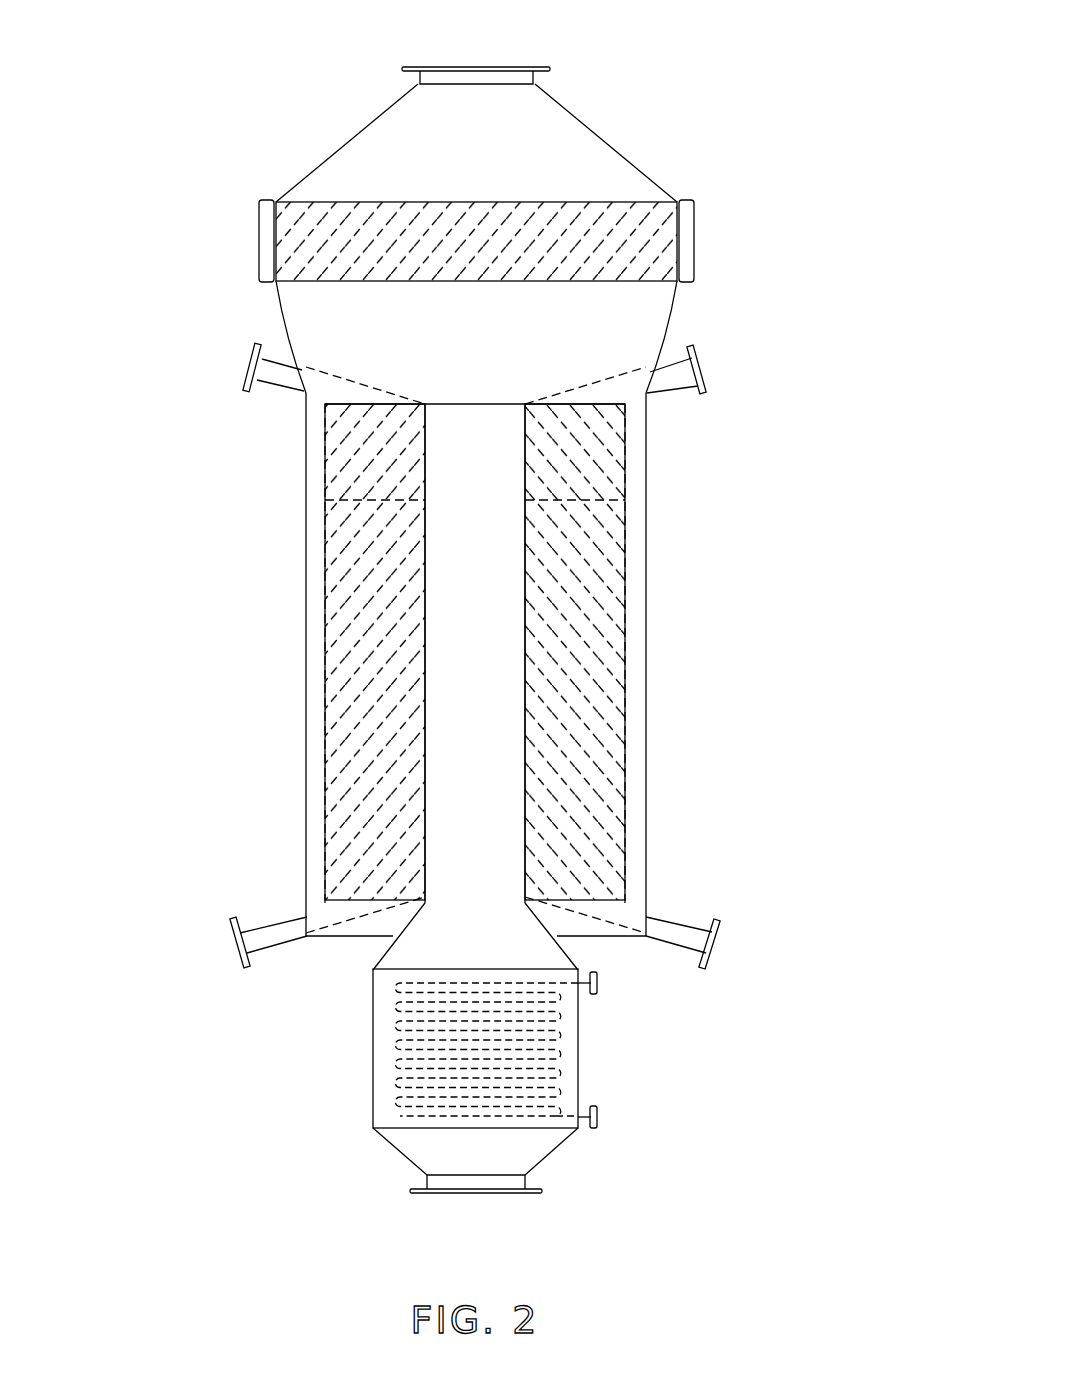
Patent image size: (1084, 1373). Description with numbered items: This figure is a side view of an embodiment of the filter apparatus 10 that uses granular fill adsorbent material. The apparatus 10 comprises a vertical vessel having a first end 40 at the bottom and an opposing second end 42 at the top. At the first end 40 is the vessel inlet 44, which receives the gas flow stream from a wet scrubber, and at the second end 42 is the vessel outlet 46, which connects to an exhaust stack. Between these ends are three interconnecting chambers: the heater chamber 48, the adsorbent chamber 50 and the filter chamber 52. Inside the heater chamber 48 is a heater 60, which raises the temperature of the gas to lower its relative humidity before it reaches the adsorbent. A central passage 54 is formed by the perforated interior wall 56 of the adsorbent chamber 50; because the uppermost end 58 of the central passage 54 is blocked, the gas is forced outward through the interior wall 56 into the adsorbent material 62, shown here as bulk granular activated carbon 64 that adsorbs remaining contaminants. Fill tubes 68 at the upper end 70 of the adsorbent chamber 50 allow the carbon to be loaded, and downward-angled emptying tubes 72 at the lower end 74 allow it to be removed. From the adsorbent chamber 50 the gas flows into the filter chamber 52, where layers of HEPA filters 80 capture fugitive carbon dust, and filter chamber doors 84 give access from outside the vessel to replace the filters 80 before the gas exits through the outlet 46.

The apparatus 10 is at (270, 148).
The first end 40 is at (395, 1157).
The second end 42 is at (600, 129).
The vessel inlet 44 is at (522, 1203).
The vessel outlet 46 is at (432, 62).
The heater chamber 48 is at (567, 1038).
The adsorbent chamber 50 is at (590, 802).
The filter chamber 52 is at (638, 325).
The central passage 54 is at (460, 633).
The interior wall 56 is at (420, 748).
The uppermost end 58 is at (460, 406).
The heater 60 is at (390, 1062).
The adsorbent material 62 is at (583, 633).
The granular activated carbon 64 is at (598, 540).
The fill tubes 68 is at (670, 378).
The upper end 70 is at (325, 433).
The emptying tubes 72 is at (678, 935).
The lower end 74 is at (322, 887).
The filters 80 is at (303, 250).
The filter chamber doors 84 is at (700, 241).